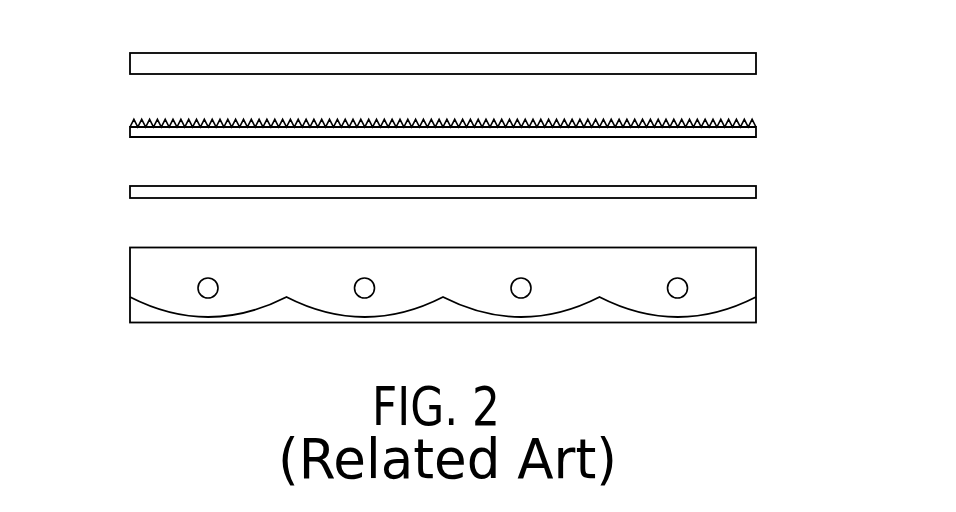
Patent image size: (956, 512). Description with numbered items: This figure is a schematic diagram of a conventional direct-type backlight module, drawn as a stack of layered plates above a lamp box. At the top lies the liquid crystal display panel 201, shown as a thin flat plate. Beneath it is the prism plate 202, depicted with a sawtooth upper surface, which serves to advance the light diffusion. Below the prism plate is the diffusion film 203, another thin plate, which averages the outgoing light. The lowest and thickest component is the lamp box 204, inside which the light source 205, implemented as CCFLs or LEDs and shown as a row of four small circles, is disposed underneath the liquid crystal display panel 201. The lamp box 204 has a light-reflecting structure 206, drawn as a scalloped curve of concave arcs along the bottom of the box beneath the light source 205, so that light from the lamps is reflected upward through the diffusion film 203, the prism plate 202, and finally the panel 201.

The liquid crystal display panel 201 is at (756, 65).
The prism plate 202 is at (756, 130).
The diffusion film 203 is at (756, 191).
The lamp box 204 is at (448, 311).
The light source 205 is at (206, 286).
The light-reflecting structure 206 is at (288, 302).